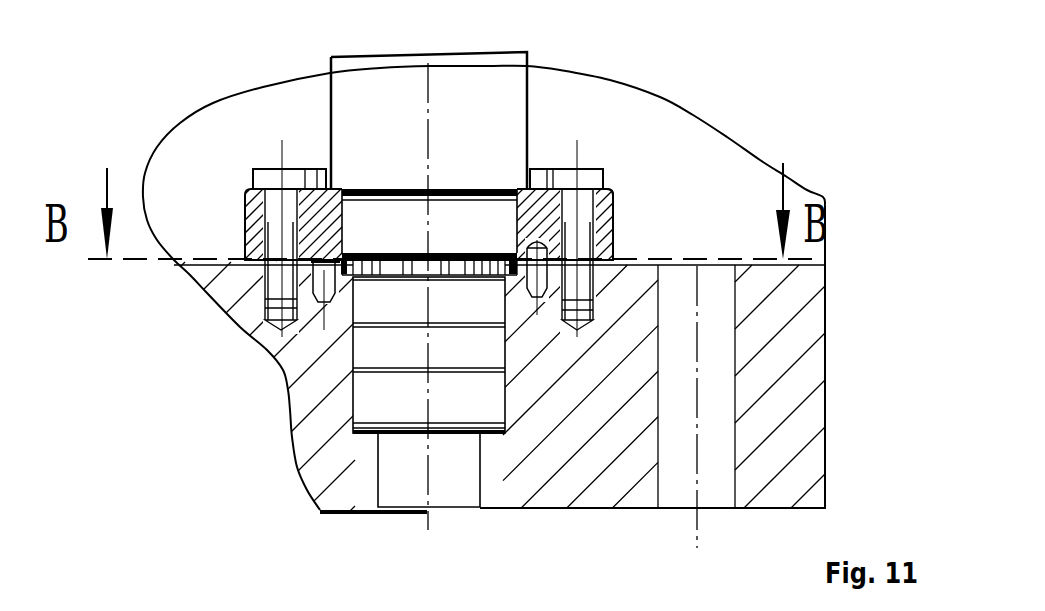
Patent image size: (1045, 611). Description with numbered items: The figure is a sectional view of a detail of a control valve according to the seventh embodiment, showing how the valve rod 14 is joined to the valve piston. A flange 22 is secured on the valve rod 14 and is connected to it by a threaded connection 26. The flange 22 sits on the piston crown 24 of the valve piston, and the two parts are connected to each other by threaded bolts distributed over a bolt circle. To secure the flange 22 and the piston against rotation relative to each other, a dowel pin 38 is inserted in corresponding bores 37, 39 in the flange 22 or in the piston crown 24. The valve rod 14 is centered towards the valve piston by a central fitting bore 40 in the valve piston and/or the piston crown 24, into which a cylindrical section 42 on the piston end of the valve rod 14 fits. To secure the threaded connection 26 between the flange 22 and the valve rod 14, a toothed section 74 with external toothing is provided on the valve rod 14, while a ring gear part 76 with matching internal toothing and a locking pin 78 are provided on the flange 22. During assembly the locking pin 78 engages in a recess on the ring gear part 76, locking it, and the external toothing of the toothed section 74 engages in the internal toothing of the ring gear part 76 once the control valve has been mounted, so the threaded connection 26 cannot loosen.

The valve rod 14 is at (478, 82).
The flange 22 is at (245, 198).
The piston crown 24 is at (633, 313).
The threaded connection 26 is at (323, 263).
The bore 37 is at (613, 232).
The dowel pin 38 is at (555, 228).
The bore 39 is at (600, 192).
The central fitting bore 40 is at (352, 392).
The cylindrical section 42 is at (372, 408).
The toothed section 74 is at (462, 262).
The ring gear part 76 is at (398, 249).
The locking pin 78 is at (306, 307).